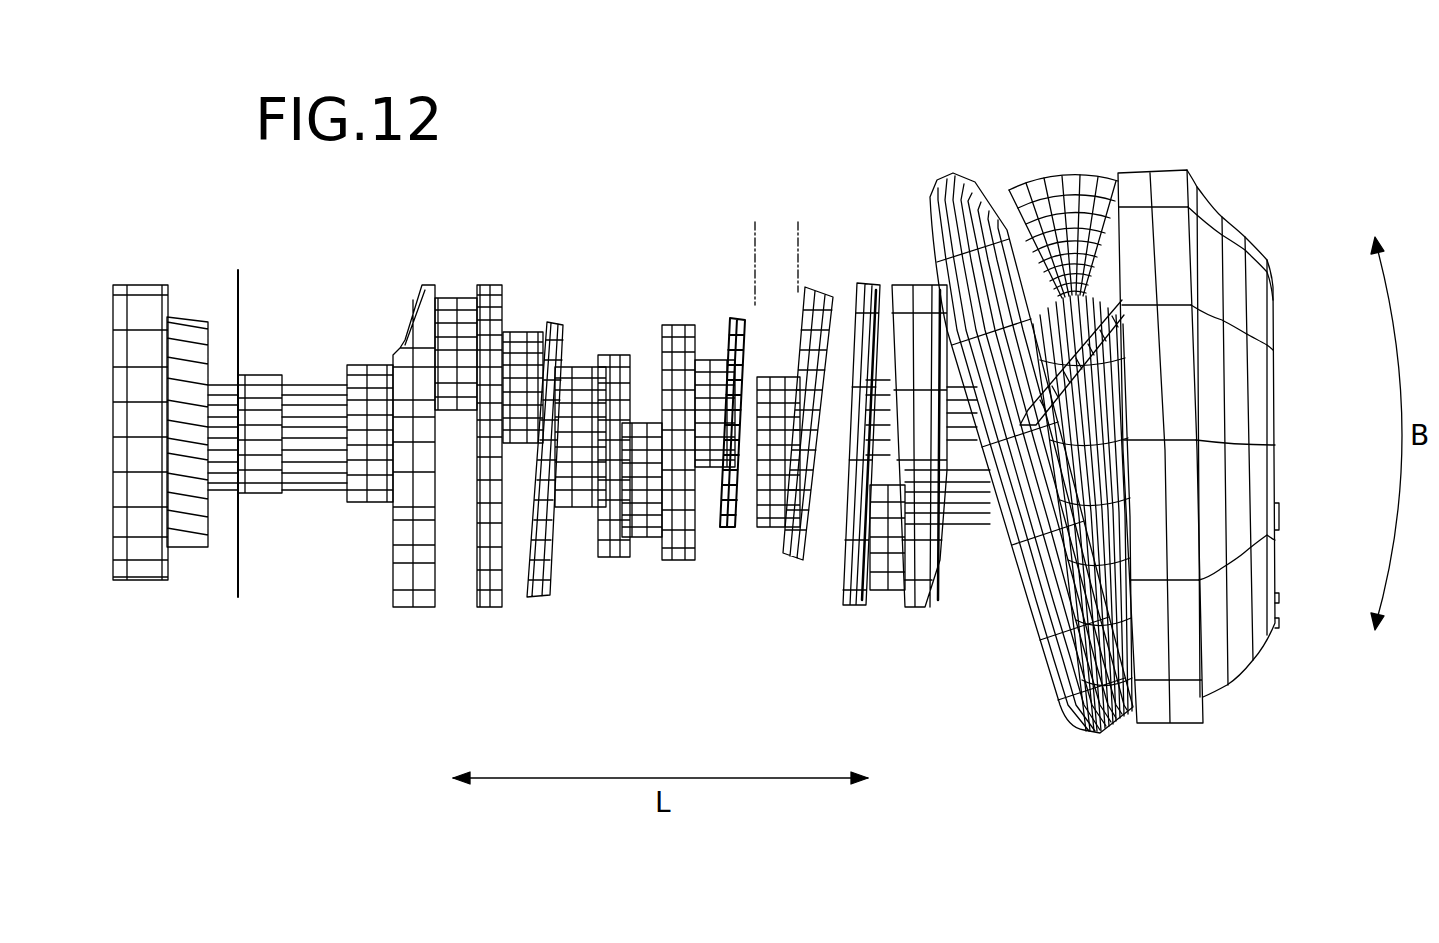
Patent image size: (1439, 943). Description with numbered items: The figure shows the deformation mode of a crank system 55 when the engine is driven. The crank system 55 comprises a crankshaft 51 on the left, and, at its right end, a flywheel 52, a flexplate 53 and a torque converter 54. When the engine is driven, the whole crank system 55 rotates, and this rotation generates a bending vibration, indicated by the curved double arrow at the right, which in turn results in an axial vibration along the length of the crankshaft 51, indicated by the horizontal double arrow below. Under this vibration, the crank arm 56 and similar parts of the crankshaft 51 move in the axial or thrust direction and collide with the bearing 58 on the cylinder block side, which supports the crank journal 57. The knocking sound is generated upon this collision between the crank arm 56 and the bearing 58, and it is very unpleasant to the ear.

The crankshaft 51 is at (595, 282).
The flywheel 52 is at (976, 163).
The flexplate 53 is at (1080, 163).
The torque converter 54 is at (1168, 161).
The crank system 55 is at (768, 160).
The crank arm 56 is at (817, 288).
The crank journal 57 is at (758, 510).
The bearing 58 is at (752, 288).